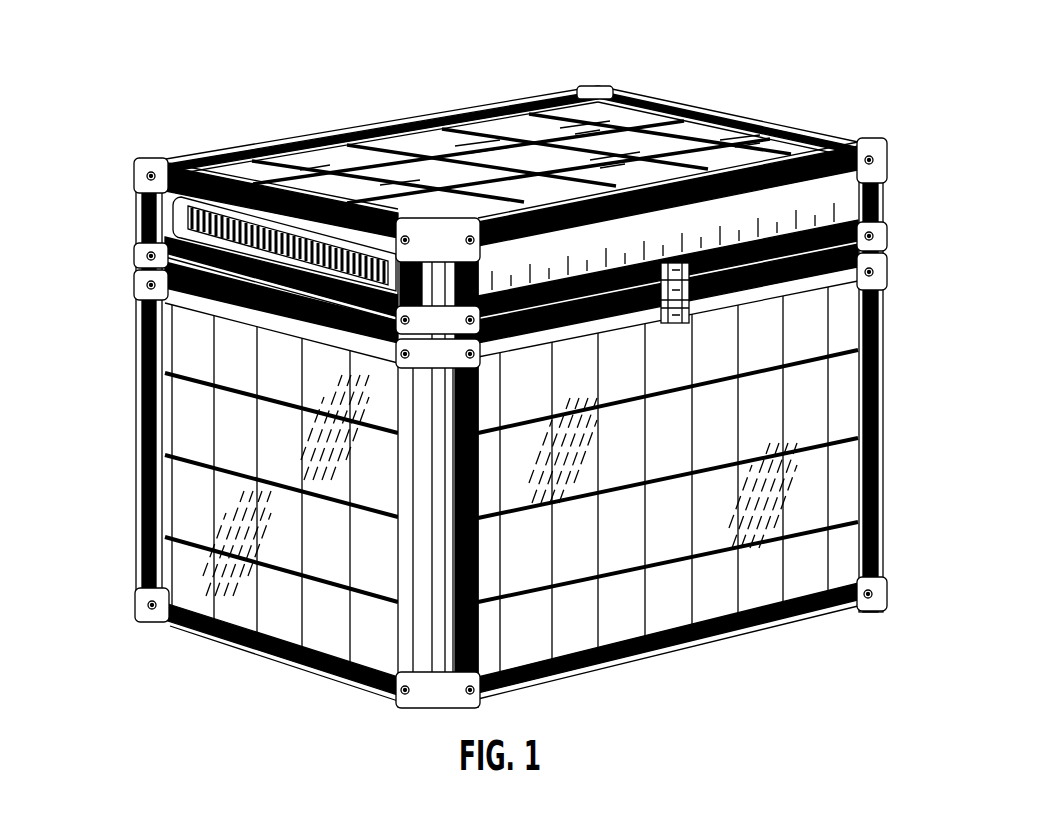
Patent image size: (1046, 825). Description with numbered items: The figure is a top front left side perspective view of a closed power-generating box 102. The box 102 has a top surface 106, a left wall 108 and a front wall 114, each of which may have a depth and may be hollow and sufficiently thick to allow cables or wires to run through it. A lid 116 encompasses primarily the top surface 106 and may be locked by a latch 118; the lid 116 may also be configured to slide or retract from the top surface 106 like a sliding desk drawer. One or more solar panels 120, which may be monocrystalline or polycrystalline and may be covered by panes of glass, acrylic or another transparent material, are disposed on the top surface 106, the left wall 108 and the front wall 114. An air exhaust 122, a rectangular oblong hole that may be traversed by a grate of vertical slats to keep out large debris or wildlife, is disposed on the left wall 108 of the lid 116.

The box 102 is at (122, 128).
The top surface 106 is at (667, 122).
The left wall 108 is at (190, 452).
The front wall 114 is at (820, 502).
The lid 116 is at (857, 208).
The latch 118 is at (693, 280).
The solar panels 120 is at (477, 143).
The air exhaust 122 is at (202, 228).